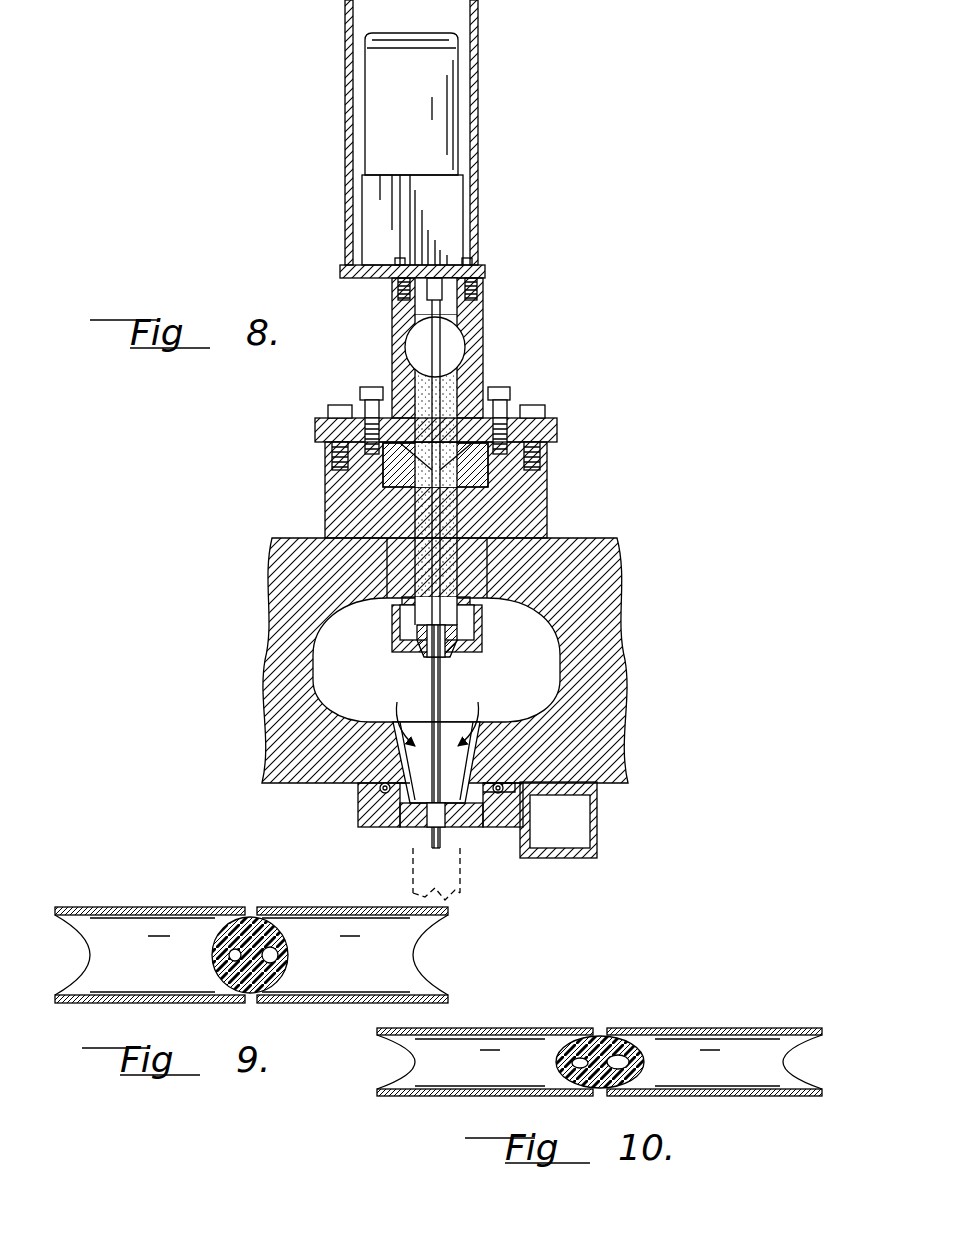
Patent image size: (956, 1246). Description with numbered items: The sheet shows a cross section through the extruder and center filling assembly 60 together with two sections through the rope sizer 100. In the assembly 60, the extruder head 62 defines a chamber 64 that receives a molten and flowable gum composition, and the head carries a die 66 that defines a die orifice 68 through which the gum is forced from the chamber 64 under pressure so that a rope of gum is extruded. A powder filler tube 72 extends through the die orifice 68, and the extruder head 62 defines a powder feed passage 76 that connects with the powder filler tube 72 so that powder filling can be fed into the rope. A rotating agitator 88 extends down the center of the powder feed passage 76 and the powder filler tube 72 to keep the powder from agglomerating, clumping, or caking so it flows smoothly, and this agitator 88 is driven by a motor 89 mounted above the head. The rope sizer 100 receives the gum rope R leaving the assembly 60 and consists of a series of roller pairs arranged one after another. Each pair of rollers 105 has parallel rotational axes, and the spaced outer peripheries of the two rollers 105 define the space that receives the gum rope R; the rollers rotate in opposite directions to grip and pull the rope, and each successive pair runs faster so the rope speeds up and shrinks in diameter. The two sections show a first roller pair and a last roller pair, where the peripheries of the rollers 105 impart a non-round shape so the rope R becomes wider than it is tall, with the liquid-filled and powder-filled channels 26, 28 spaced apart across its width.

In FIG. 8, the motor 89 is at (445, 100).
In FIG. 8, the rotating agitator 88 is at (440, 350).
In FIG. 8, the powder feed passage 76 is at (457, 442).
In FIG. 8, the extruder and center filling assembly 60 is at (312, 488).
In FIG. 8, the extruder head 62 is at (583, 543).
In FIG. 8, the chamber 64 is at (345, 645).
In FIG. 8, the powder filler tube 72 is at (447, 673).
In FIG. 8, the die 66 is at (413, 796).
In FIG. 8, the die orifice 68 is at (457, 818).
In FIG. 9, the rope sizer 100 is at (251, 916).
In FIG. 10, the rope sizer 100 is at (603, 1039).
In FIG. 9, the rollers 105 is at (105, 925).
In FIG. 10, the rollers 105 is at (465, 1097).
In FIG. 9, the gum rope R is at (257, 919).
In FIG. 10, the gum rope R is at (601, 1029).
In FIG. 9, the liquid-filled channel 26 is at (285, 956).
In FIG. 10, the liquid-filled channel 26 is at (633, 1063).
In FIG. 9, the powder-filled channel 28 is at (230, 958).
In FIG. 10, the powder-filled channel 28 is at (575, 1063).